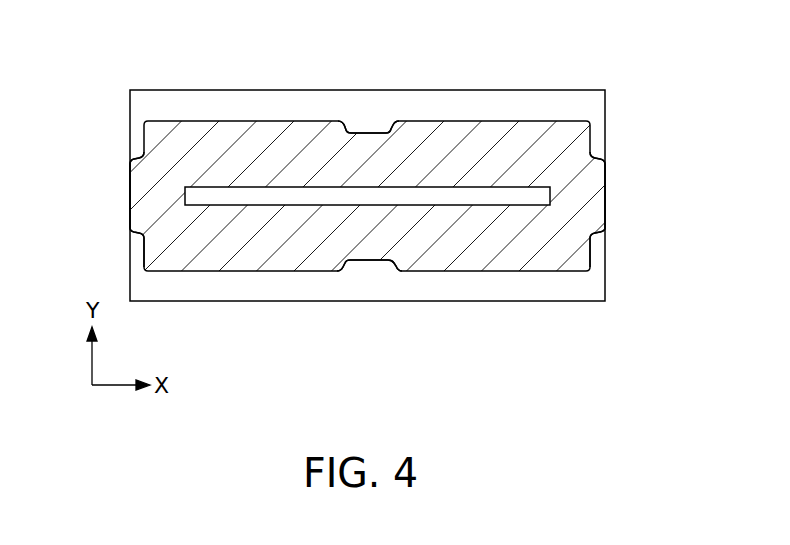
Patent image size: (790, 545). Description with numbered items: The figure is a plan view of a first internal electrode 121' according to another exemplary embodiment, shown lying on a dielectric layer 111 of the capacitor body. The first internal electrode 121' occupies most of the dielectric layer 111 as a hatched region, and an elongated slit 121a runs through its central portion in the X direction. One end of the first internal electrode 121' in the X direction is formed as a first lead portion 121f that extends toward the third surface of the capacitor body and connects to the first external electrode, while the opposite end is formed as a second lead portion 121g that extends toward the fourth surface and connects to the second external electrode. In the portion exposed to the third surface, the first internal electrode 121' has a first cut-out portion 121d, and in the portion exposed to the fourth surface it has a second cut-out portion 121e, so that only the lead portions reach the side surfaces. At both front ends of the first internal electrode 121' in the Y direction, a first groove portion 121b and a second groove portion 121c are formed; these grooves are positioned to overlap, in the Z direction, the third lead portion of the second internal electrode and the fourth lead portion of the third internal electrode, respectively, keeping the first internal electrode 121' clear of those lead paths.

The dielectric layer 111 is at (497, 107).
The first internal electrode 121' is at (372, 235).
The slit 121a is at (550, 197).
The first groove portion 121b is at (366, 262).
The second groove portion 121c is at (363, 123).
The first cut-out portion 121d is at (136, 247).
The second cut-out portion 121e is at (592, 247).
The first lead portion 121f is at (139, 195).
The second lead portion 121g is at (592, 170).